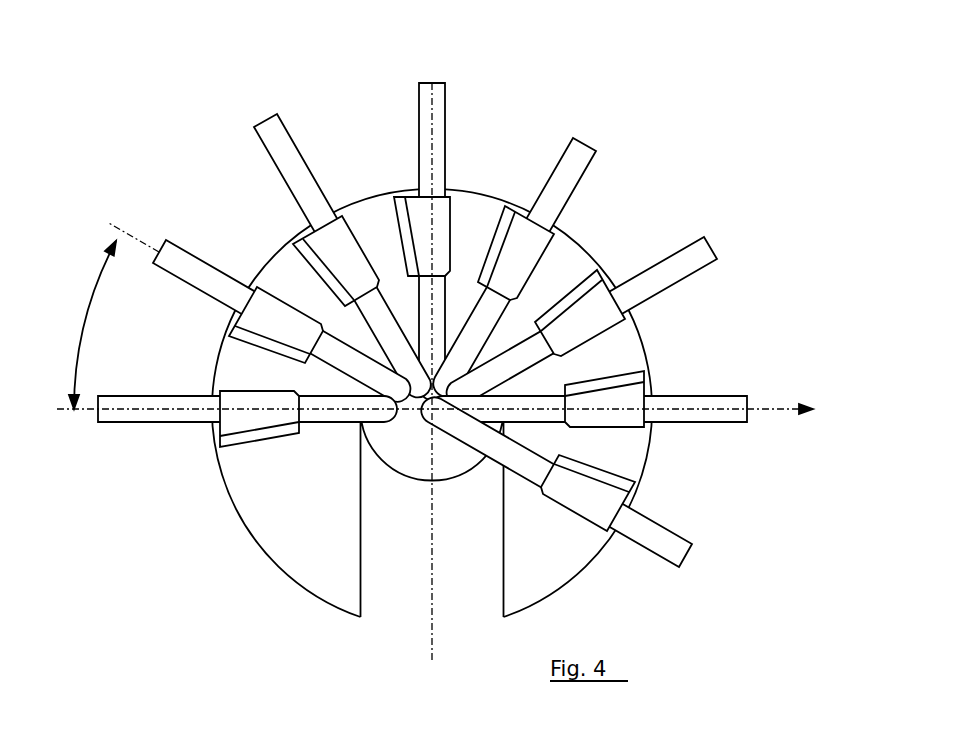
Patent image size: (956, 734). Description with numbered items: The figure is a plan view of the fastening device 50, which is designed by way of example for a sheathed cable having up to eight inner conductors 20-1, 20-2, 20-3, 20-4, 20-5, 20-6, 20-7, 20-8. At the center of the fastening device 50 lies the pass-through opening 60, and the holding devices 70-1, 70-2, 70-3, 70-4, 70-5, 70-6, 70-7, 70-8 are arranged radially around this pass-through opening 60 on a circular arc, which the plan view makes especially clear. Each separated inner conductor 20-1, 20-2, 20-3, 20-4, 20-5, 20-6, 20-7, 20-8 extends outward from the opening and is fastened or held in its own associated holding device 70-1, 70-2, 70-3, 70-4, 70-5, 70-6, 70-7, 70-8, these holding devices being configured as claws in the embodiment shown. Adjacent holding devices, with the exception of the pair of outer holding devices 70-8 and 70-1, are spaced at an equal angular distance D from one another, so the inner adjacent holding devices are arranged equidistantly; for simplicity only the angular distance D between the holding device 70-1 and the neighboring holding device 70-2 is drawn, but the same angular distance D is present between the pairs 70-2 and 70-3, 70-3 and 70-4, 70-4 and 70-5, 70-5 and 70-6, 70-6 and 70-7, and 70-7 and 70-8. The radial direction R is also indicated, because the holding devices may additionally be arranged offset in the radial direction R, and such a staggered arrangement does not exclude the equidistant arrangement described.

The fastening device 50 is at (243, 605).
The pass-through opening 60 is at (418, 628).
The inner conductor 20-1 is at (133, 415).
The inner conductor 20-2 is at (177, 250).
The inner conductor 20-3 is at (267, 130).
The inner conductor 20-4 is at (438, 132).
The inner conductor 20-5 is at (580, 165).
The inner conductor 20-6 is at (707, 263).
The inner conductor 20-7 is at (747, 420).
The inner conductor 20-8 is at (683, 560).
The holding device 70-1 is at (230, 430).
The holding device 70-2 is at (237, 342).
The holding device 70-3 is at (320, 252).
The holding device 70-4 is at (412, 207).
The holding device 70-5 is at (527, 240).
The holding device 70-6 is at (583, 307).
The holding device 70-7 is at (617, 397).
The holding device 70-8 is at (607, 492).
The angular distance D is at (85, 325).
The radial direction R is at (818, 415).